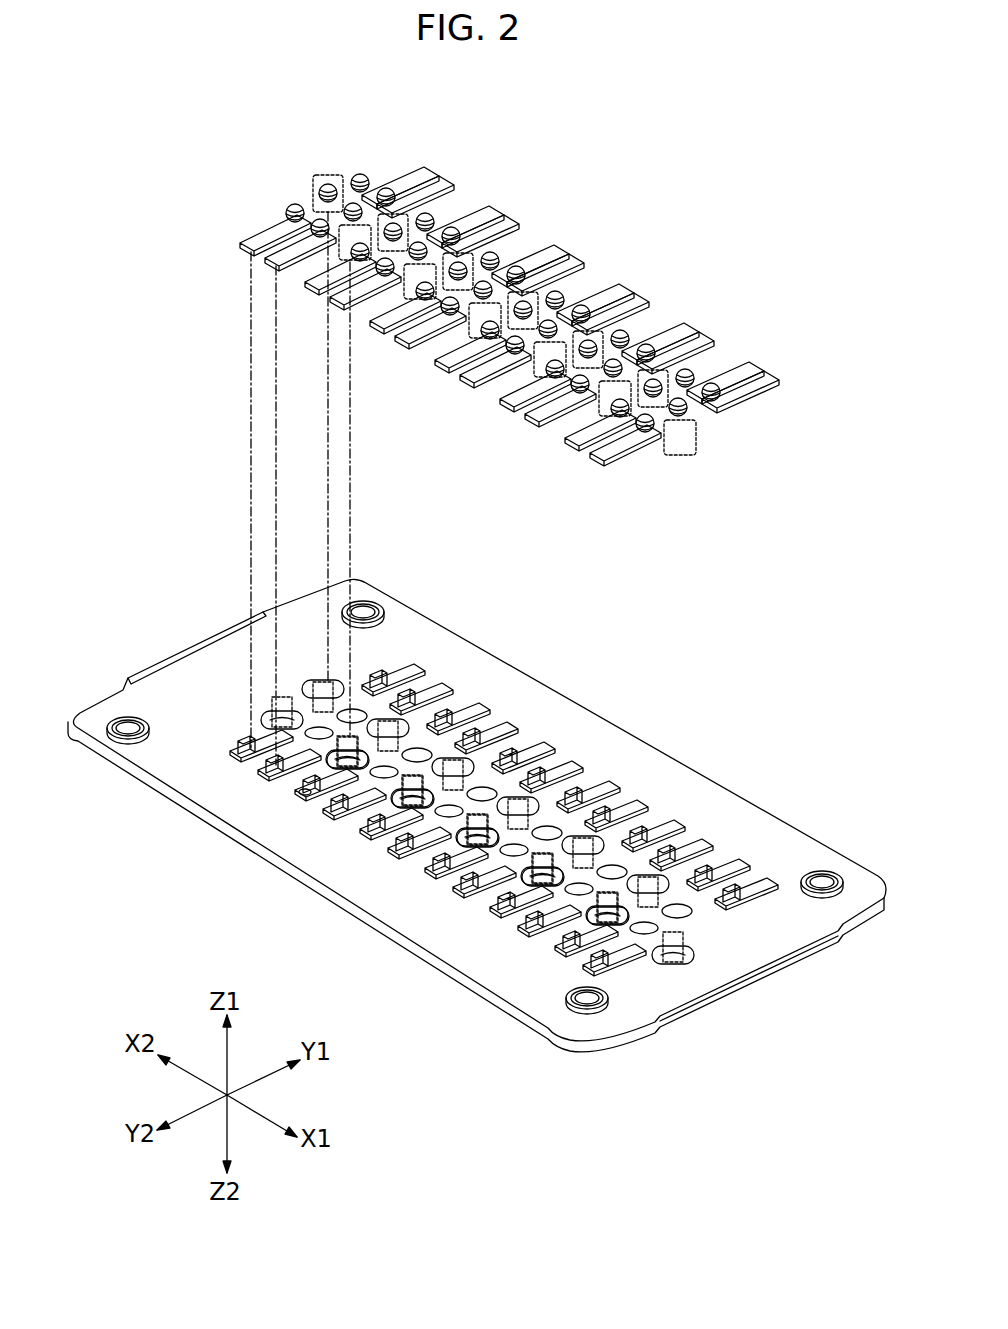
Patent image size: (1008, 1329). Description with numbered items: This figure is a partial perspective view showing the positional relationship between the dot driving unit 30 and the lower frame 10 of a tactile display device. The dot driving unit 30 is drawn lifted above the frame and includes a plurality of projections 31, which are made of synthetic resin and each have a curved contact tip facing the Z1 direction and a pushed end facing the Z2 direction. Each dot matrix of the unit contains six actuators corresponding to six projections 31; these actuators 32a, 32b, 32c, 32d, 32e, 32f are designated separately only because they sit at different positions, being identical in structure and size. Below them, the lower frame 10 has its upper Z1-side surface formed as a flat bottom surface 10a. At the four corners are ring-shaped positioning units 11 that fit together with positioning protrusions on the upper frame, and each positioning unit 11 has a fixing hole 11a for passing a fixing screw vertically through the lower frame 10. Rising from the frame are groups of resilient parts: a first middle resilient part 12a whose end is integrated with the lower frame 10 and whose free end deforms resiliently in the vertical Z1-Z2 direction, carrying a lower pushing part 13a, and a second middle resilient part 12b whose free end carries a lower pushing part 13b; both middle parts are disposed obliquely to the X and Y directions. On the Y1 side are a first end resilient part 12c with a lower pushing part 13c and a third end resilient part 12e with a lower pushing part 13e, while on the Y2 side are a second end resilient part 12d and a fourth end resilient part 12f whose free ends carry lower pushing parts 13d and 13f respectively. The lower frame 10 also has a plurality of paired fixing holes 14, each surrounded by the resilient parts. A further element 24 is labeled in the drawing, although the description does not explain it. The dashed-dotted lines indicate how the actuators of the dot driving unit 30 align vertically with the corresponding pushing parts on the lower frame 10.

The lower frame 10 is at (460, 802).
The flat bottom surface 10a is at (625, 745).
The positioning unit 11 is at (459, 802).
The fixing hole 11a is at (363, 604).
The first middle resilient part 12a is at (338, 775).
The second middle resilient part 12b is at (263, 614).
The first end resilient part 12c is at (440, 686).
The second end resilient part 12d is at (262, 774).
The third end resilient part 12e is at (395, 678).
The fourth end resilient part 12f is at (240, 746).
The lower pushing part 13a is at (315, 842).
The lower pushing part 13b is at (318, 682).
The lower pushing part 13c is at (501, 666).
The lower pushing part 13d is at (221, 815).
The lower pushing part 13e is at (447, 637).
The lower pushing part 13f is at (190, 747).
The paired fixing holes 14 is at (387, 670).
The through hole 24 is at (305, 794).
The dot driving unit 30 is at (800, 412).
The projection 31 is at (286, 212).
The actuator 32a is at (345, 250).
The actuator 32b is at (320, 176).
The actuator 32c is at (432, 195).
The actuator 32d is at (280, 262).
The actuator 32e is at (402, 180).
The actuator 32f is at (250, 244).